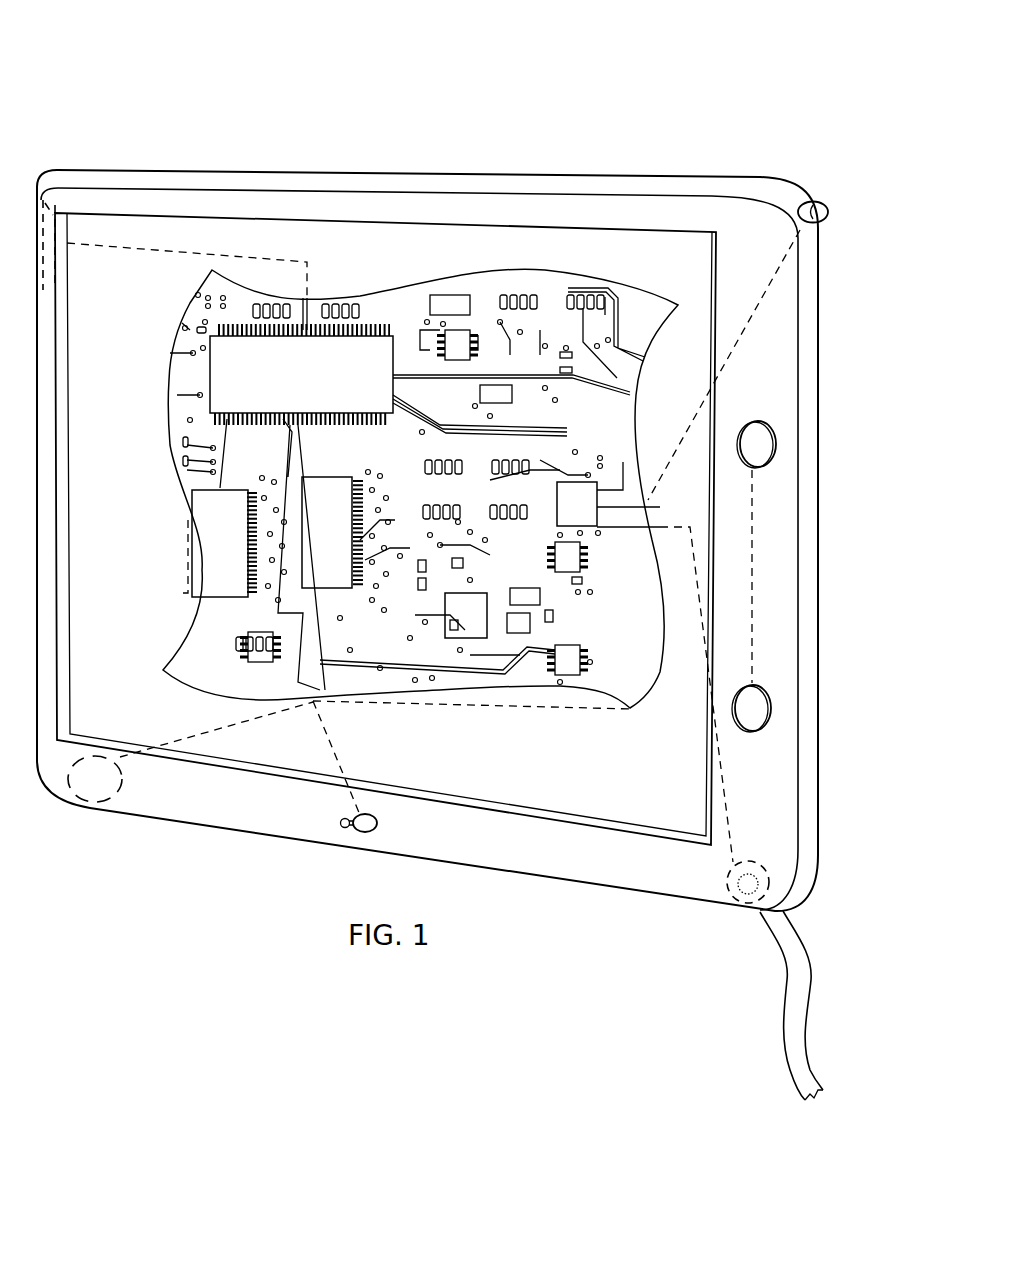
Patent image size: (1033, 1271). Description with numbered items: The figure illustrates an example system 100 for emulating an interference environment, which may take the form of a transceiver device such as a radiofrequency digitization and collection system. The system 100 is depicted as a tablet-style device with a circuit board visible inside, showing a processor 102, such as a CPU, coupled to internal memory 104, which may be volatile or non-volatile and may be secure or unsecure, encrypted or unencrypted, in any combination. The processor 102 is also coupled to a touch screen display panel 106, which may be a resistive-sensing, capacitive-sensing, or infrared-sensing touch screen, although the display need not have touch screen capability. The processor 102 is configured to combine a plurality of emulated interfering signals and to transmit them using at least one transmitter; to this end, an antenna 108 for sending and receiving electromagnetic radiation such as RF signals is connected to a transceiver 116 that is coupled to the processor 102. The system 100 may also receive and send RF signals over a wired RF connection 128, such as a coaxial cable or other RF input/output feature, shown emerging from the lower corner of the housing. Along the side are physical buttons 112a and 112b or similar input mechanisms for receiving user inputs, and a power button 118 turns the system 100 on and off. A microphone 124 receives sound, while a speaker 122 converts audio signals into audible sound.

The system 100 is at (161, 47).
The processor 102 is at (313, 380).
The internal memory 104 is at (237, 517).
The touch screen display panel 106 is at (593, 229).
The antenna 108 is at (808, 202).
The physical button 112a is at (737, 447).
The physical button 112b is at (733, 720).
The transceiver 116 is at (585, 517).
The power button 118 is at (48, 203).
The speaker 122 is at (103, 800).
The microphone 124 is at (368, 832).
The wired RF connection 128 is at (783, 950).